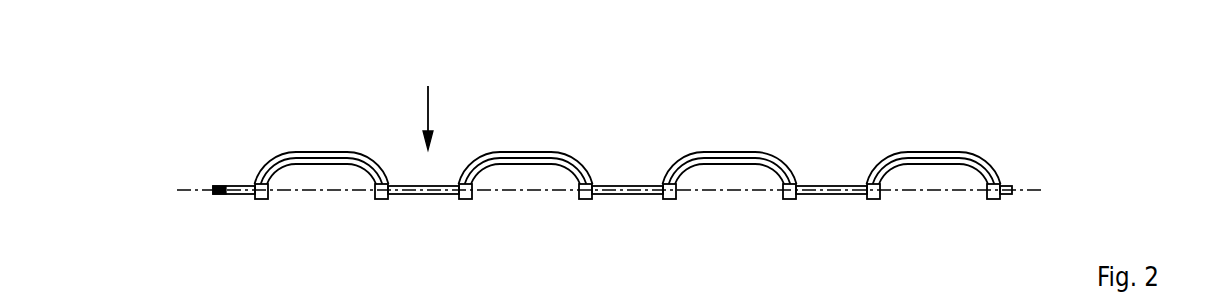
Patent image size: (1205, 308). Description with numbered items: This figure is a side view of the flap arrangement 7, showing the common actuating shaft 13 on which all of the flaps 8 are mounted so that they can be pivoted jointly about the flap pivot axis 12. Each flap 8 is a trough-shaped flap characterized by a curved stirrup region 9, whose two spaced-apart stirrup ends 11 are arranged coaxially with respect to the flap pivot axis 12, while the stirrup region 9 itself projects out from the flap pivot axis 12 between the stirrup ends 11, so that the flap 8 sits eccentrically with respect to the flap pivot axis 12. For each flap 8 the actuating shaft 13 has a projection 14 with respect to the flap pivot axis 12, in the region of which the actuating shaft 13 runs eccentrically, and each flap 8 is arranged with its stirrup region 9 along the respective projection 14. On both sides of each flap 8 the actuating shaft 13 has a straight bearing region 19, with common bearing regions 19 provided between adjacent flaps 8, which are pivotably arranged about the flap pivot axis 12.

The flap arrangement 7 is at (1055, 158).
The flap 8 is at (320, 140).
The stirrup region 9 is at (340, 155).
The stirrup ends 11 is at (265, 199).
The flap pivot axis 12 is at (182, 188).
The actuating shaft 13 is at (622, 174).
The projection 14 is at (321, 165).
The bearing region 19 is at (229, 194).